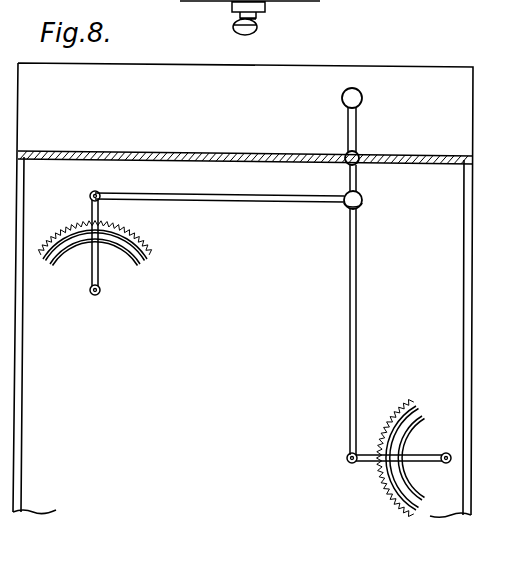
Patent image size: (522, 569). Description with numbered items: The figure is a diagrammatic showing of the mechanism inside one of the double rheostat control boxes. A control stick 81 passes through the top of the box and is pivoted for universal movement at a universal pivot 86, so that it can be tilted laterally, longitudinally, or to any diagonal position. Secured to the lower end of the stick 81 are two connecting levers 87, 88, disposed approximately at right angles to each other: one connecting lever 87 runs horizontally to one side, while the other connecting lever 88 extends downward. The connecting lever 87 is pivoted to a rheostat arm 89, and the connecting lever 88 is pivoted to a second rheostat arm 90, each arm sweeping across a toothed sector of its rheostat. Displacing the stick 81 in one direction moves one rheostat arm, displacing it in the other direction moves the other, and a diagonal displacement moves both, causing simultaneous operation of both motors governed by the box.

The stick 81 is at (357, 123).
The universal pivot 86 is at (358, 163).
The connecting lever 87 is at (228, 194).
The connecting lever 88 is at (348, 306).
The rheostat arm 89 is at (99, 270).
The rheostat arm 90 is at (367, 463).